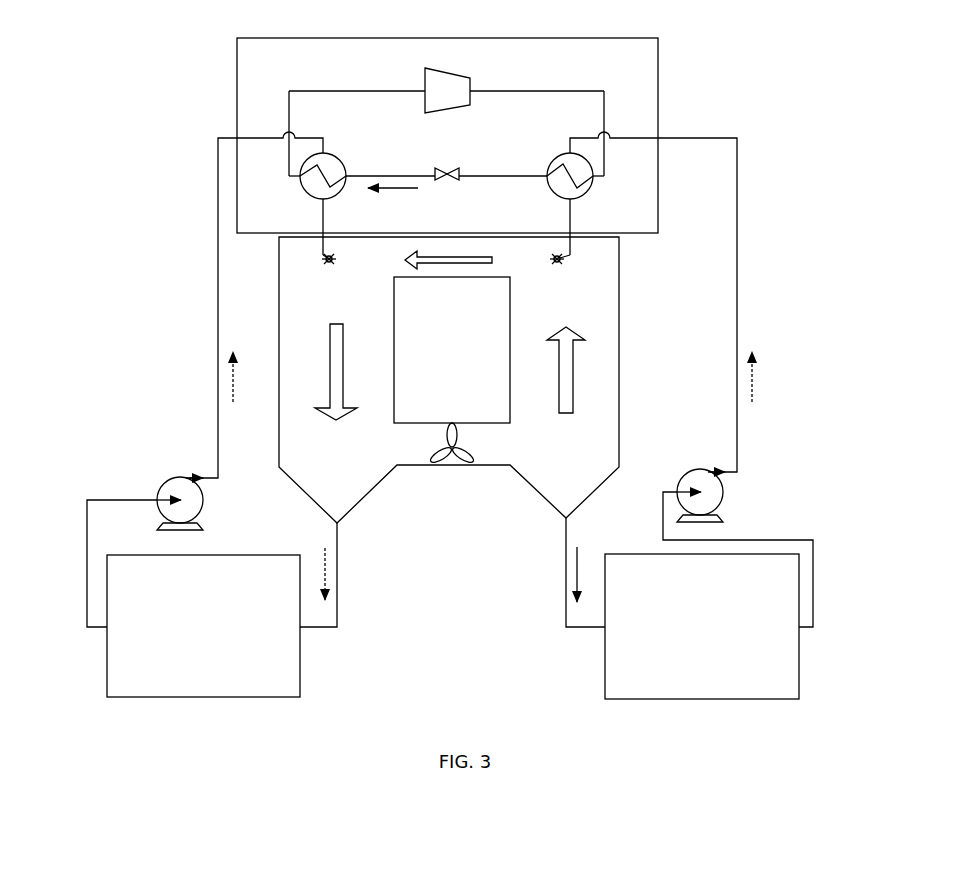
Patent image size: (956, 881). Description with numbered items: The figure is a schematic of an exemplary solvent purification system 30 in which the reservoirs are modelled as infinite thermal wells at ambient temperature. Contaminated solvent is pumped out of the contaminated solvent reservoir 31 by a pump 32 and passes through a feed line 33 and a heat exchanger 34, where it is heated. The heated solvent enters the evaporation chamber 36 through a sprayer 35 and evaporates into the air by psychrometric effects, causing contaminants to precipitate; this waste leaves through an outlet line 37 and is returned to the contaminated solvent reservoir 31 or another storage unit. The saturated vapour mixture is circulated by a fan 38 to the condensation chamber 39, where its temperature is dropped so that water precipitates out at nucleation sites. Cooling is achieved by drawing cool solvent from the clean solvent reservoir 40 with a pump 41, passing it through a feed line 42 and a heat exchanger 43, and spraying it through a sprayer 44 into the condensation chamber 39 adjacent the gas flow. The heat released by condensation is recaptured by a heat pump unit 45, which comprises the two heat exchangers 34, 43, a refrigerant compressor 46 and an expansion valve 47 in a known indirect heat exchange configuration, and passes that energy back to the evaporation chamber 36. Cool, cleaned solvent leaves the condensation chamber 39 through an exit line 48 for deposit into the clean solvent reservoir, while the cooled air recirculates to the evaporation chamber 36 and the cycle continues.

The system 30 is at (788, 91).
The contaminated solvent reservoir 31 is at (805, 684).
The pump 32 is at (734, 501).
The feed line 33 is at (741, 287).
The heat exchanger 34 is at (551, 157).
The sprayer 35 is at (571, 270).
The evaporation chamber 36 is at (600, 380).
The outlet line 37 is at (556, 585).
The fan 38 is at (452, 468).
The condensation chamber 39 is at (302, 387).
The clean solvent reservoir 40 is at (93, 680).
The pump 41 is at (164, 473).
The feed line 42 is at (214, 325).
The heat exchanger 43 is at (348, 150).
The sprayer 44 is at (325, 271).
The heat pump unit 45 is at (331, 36).
The refrigerant compressor 46 is at (478, 72).
The expansion valve 47 is at (447, 166).
The exit line 48 is at (346, 579).